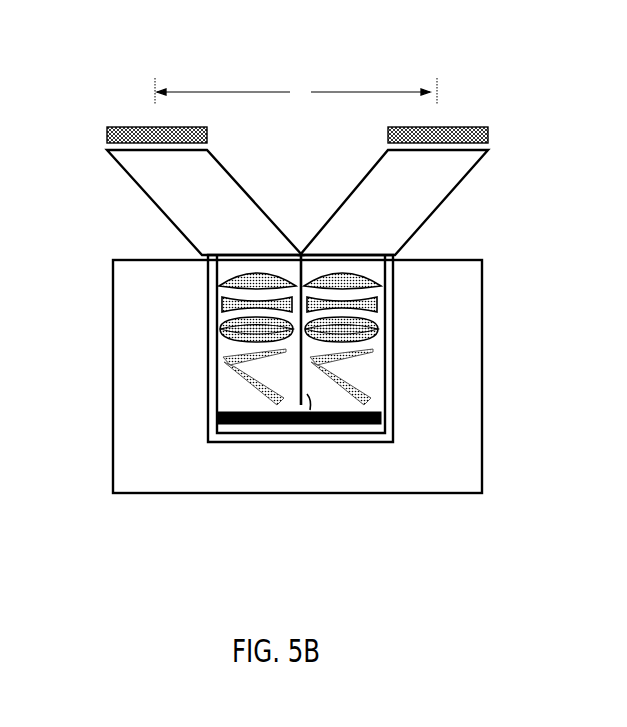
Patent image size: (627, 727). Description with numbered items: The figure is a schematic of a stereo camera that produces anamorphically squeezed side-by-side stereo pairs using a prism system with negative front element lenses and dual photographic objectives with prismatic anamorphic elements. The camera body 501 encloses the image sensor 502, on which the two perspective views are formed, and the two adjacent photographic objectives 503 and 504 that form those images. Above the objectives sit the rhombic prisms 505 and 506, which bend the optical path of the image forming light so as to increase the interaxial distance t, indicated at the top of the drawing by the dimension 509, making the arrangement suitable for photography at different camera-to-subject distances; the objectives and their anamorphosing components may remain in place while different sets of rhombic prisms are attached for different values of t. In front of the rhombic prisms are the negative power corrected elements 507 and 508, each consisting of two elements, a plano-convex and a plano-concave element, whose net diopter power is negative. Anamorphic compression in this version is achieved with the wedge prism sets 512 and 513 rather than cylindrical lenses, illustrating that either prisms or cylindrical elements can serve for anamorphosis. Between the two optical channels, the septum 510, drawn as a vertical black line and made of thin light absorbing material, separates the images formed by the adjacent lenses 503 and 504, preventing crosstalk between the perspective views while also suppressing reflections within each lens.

The camera body 501 is at (200, 503).
The image sensor 502 is at (332, 427).
The photographic objective 503 is at (221, 307).
The photographic objective 504 is at (383, 308).
The rhombic prism 505 is at (132, 185).
The rhombic prism 506 is at (455, 198).
The negative power corrected element 507 is at (92, 137).
The negative power corrected element 508 is at (497, 118).
The aperture separation distance t 509 is at (330, 58).
The septum 510 is at (310, 425).
The wedge prism set 512 is at (238, 388).
The wedge prism set 513 is at (373, 390).